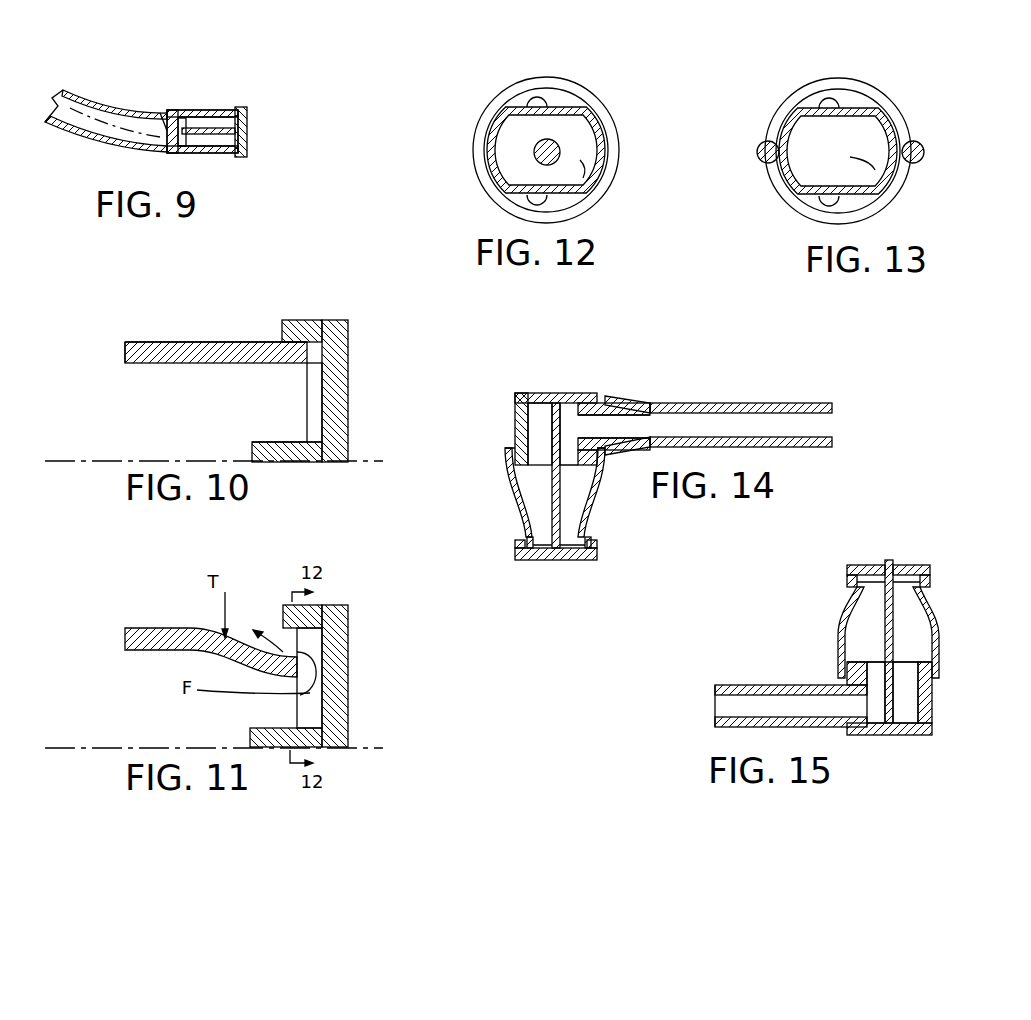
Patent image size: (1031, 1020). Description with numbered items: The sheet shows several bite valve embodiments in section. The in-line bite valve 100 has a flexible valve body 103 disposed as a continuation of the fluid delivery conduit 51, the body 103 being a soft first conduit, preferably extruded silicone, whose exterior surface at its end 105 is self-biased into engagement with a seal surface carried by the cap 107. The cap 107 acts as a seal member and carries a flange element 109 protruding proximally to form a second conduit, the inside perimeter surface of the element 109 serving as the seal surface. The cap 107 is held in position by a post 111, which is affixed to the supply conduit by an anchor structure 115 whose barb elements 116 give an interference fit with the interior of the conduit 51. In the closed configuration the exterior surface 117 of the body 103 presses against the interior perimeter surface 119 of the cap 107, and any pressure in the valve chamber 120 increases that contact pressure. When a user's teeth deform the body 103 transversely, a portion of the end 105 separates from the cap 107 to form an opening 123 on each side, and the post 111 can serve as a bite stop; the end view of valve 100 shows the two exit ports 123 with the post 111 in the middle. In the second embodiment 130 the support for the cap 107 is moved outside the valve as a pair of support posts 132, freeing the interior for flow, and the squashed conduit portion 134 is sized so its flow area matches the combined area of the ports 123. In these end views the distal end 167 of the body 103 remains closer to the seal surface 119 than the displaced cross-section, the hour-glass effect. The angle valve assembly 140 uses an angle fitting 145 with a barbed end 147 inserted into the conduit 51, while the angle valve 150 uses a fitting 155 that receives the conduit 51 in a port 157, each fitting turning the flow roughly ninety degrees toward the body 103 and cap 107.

In FIG. 9, the fluid delivery conduit 51 is at (73, 100).
In FIG. 14, the fluid delivery conduit 51 is at (782, 427).
In FIG. 15, the fluid delivery conduit 51 is at (728, 705).
In FIG. 9, the in-line bite valve 100 is at (268, 98).
In FIG. 12, the in-line bite valve 100 is at (449, 147).
In FIG. 9, the valve body 103 is at (200, 108).
In FIG. 10, the valve body 103 is at (155, 360).
In FIG. 11, the valve body 103 is at (150, 643).
In FIG. 14, the valve body 103 is at (512, 495).
In FIG. 15, the valve body 103 is at (938, 627).
In FIG. 9, the end of valve body 105 is at (215, 163).
In FIG. 10, the end of valve body 105 is at (250, 390).
In FIG. 9, the cap 107 is at (247, 118).
In FIG. 10, the cap 107 is at (345, 358).
In FIG. 11, the cap 107 is at (338, 648).
In FIG. 12, the cap 107 is at (612, 118).
In FIG. 13, the cap 107 is at (900, 115).
In FIG. 14, the cap 107 is at (558, 558).
In FIG. 15, the cap 107 is at (930, 575).
In FIG. 9, the flange element 109 is at (240, 105).
In FIG. 10, the flange element 109 is at (295, 328).
In FIG. 11, the flange element 109 is at (282, 615).
In FIG. 9, the post 111 is at (193, 120).
In FIG. 10, the post 111 is at (297, 462).
In FIG. 11, the post 111 is at (272, 727).
In FIG. 12, the post 111 is at (562, 145).
In FIG. 14, the post 111 is at (553, 455).
In FIG. 15, the post 111 is at (880, 600).
In FIG. 9, the anchor structure 115 is at (163, 122).
In FIG. 9, the barb elements 116 is at (183, 157).
In FIG. 10, the exterior surface of body 117 is at (253, 341).
In FIG. 10, the interior perimeter surface of cap 119 is at (317, 352).
In FIG. 12, the interior perimeter surface of cap 119 is at (533, 205).
In FIG. 13, the interior perimeter surface of cap 119 is at (820, 93).
In FIG. 10, the valve chamber 120 is at (188, 402).
In FIG. 11, the opening 123 is at (292, 637).
In FIG. 12, the opening 123 is at (558, 97).
In FIG. 13, the opening 123 is at (852, 98).
In FIG. 13, the second valve embodiment 130 is at (775, 99).
In FIG. 13, the support posts 132 is at (760, 148).
In FIG. 12, the squashed conduit portion 134 is at (587, 163).
In FIG. 13, the squashed conduit portion 134 is at (850, 157).
In FIG. 14, the angle valve assembly 140 is at (631, 520).
In FIG. 14, the angle fitting 145 is at (528, 393).
In FIG. 14, the barbed end 147 is at (650, 403).
In FIG. 15, the angle valve embodiment 150 is at (768, 643).
In FIG. 15, the angle fitting 155 is at (930, 715).
In FIG. 15, the port 157 is at (870, 718).
In FIG. 12, the distal end of body 167 is at (515, 93).
In FIG. 13, the distal end of body 167 is at (828, 203).